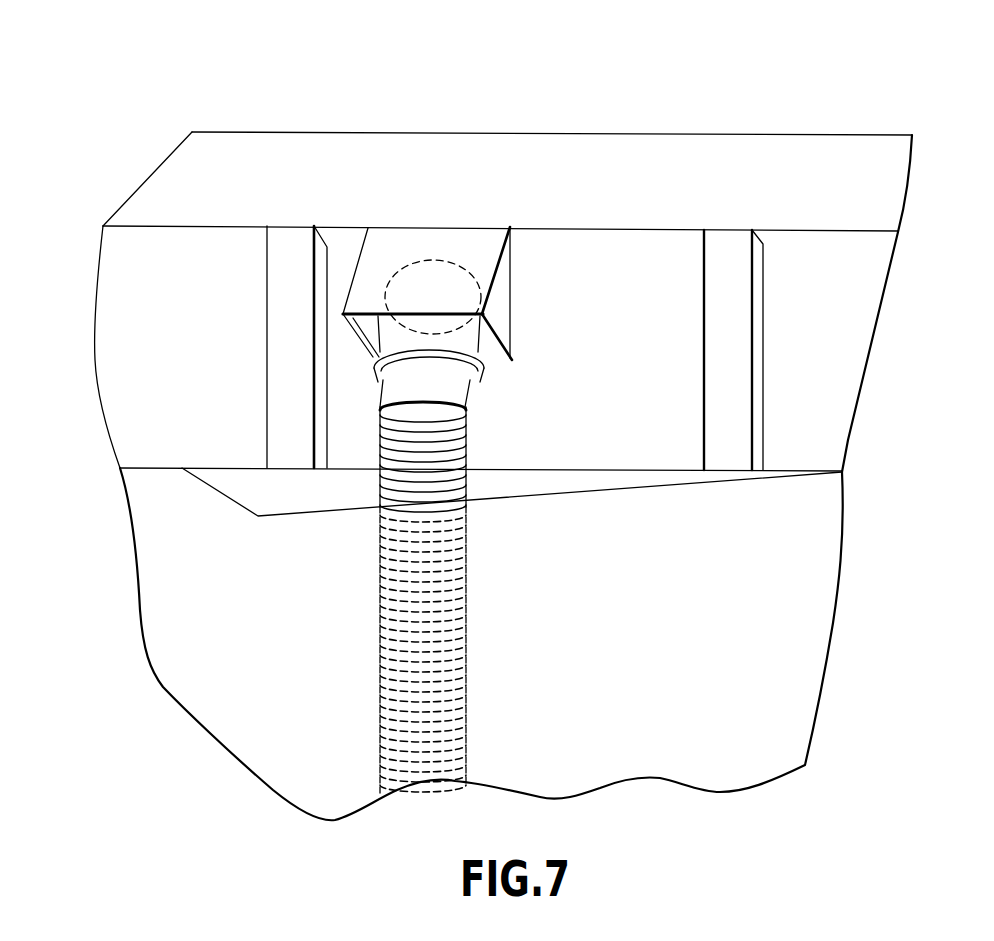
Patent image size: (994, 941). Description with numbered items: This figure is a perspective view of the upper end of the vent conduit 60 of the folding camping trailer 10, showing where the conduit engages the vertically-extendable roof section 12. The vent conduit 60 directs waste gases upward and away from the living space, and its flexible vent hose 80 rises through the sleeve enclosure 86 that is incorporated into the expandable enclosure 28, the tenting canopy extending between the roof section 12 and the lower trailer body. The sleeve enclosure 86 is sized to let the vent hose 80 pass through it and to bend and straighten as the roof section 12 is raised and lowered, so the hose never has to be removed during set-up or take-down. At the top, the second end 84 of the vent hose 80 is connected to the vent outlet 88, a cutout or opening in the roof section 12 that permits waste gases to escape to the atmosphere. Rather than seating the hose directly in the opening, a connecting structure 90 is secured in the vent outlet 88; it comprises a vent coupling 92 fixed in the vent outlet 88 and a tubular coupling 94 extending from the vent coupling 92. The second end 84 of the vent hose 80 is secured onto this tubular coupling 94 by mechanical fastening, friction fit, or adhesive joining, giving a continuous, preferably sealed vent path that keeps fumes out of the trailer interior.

The folding camping trailer 10 is at (297, 82).
The roof section 12 is at (602, 150).
The expandable enclosure 28 is at (463, 598).
The vent conduit 60 is at (459, 599).
The vent hose 80 is at (467, 607).
The second end 84 is at (380, 418).
The sleeve enclosure 86 is at (240, 466).
The vent outlet 88 is at (455, 280).
The connecting structure 90 is at (506, 370).
The vent coupling 92 is at (397, 333).
The tubular coupling 94 is at (462, 378).